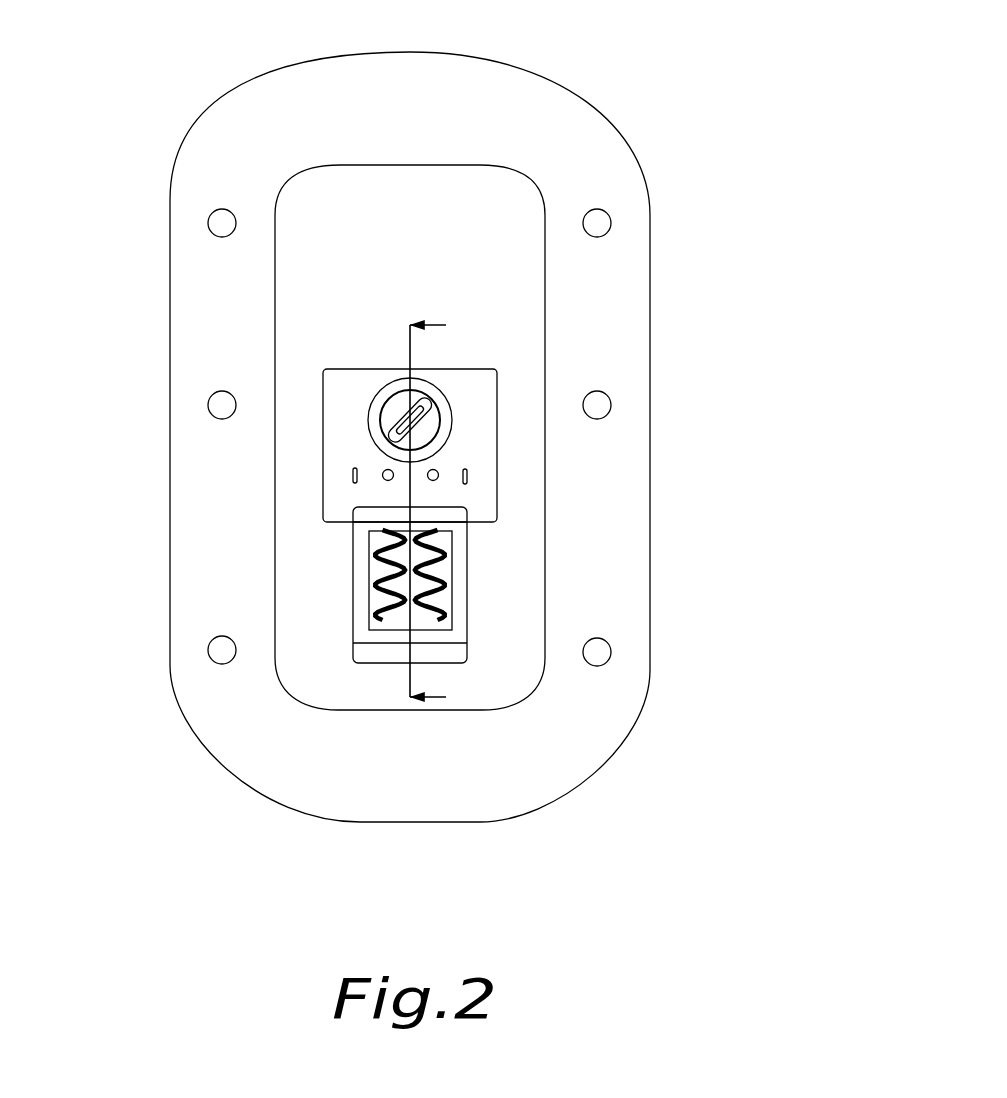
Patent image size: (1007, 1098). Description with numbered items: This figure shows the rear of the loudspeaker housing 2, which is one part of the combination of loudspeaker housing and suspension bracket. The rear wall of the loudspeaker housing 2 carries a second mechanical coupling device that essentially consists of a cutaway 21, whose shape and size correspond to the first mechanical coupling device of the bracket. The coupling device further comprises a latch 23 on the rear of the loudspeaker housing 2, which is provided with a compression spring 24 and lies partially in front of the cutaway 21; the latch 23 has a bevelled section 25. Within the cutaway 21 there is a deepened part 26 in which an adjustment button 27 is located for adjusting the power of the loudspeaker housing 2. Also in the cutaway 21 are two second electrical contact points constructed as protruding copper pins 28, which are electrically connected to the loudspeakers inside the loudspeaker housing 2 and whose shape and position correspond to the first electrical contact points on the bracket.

The loudspeaker housing 2 is at (627, 100).
The cutaway 21 is at (483, 475).
The latch 23 is at (457, 558).
The compression spring 24 is at (380, 585).
The bevelled section 25 is at (373, 514).
The deepened part 26 is at (443, 424).
The adjustment button 27 is at (428, 403).
The copper pins 28 is at (463, 484).